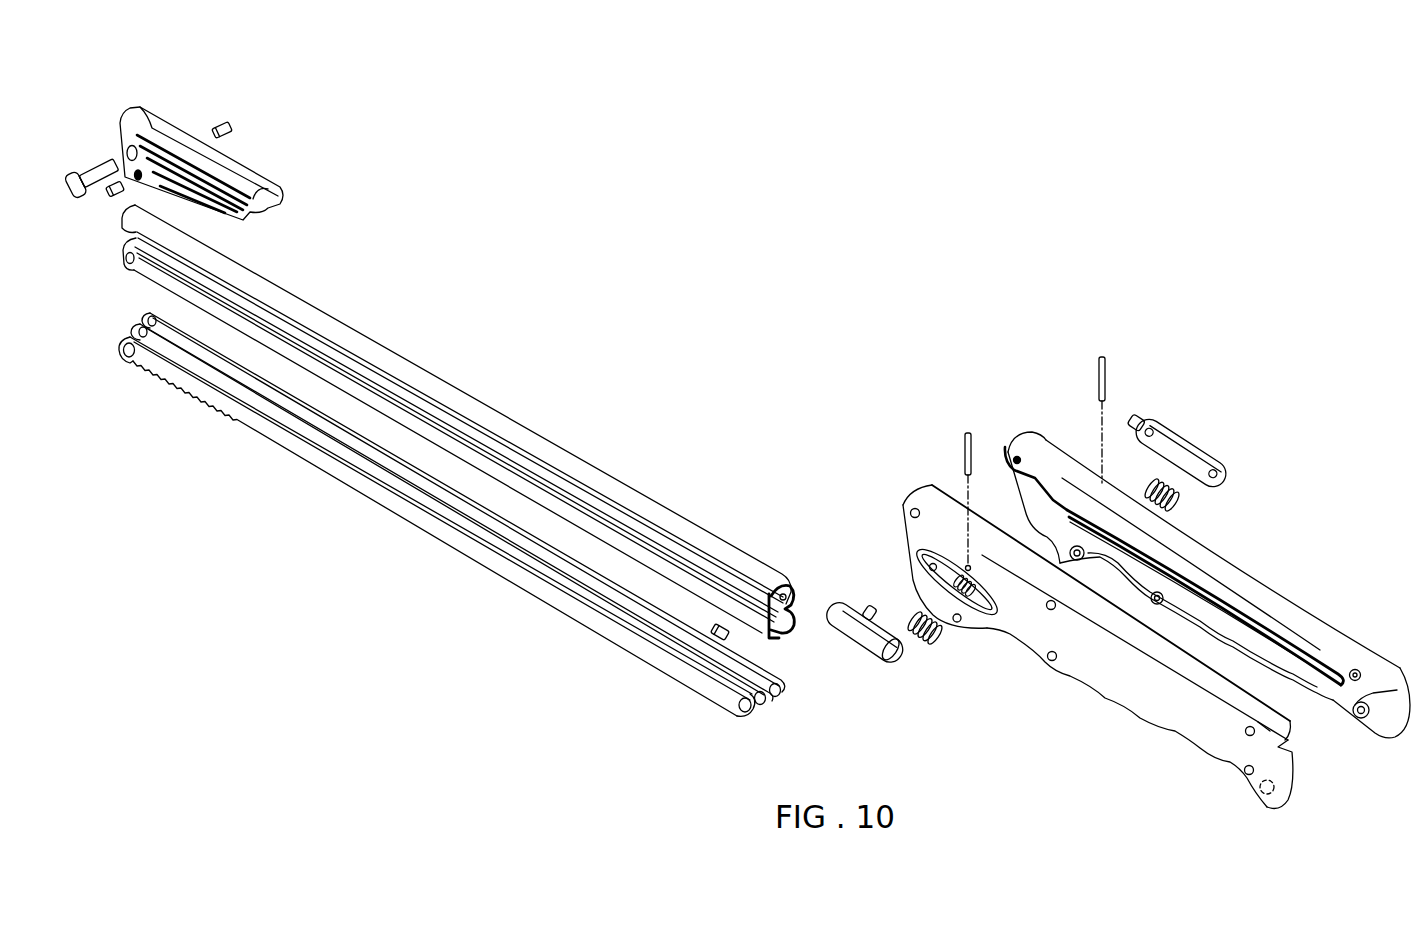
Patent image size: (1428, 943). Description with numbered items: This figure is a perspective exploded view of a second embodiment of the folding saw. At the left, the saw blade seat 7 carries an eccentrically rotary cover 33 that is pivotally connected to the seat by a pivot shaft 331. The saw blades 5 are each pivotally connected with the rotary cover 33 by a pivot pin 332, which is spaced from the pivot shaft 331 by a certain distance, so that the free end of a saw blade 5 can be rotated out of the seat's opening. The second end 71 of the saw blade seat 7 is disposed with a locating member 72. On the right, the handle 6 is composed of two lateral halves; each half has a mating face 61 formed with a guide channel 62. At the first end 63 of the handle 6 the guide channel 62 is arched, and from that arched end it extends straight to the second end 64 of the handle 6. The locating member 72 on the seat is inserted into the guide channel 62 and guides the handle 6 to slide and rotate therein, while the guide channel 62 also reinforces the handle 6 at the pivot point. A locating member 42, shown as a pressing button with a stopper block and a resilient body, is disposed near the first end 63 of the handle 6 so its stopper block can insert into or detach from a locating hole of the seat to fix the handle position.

The rotary cover 33 is at (152, 122).
The pivot shaft 331 is at (232, 130).
The pivot pin 332 is at (96, 163).
The saw blade seat 7 is at (523, 433).
The second end of the saw blade seat 71 is at (777, 590).
The locating member 72 is at (728, 629).
The saw blade 5 is at (423, 523).
The first end of the handle 63 is at (900, 507).
The handle 6 is at (1072, 667).
The second end of the handle 64 is at (1398, 726).
The locating member 42 is at (890, 655).
The guide channel 62 is at (1317, 657).
The mating face 61 is at (1357, 680).